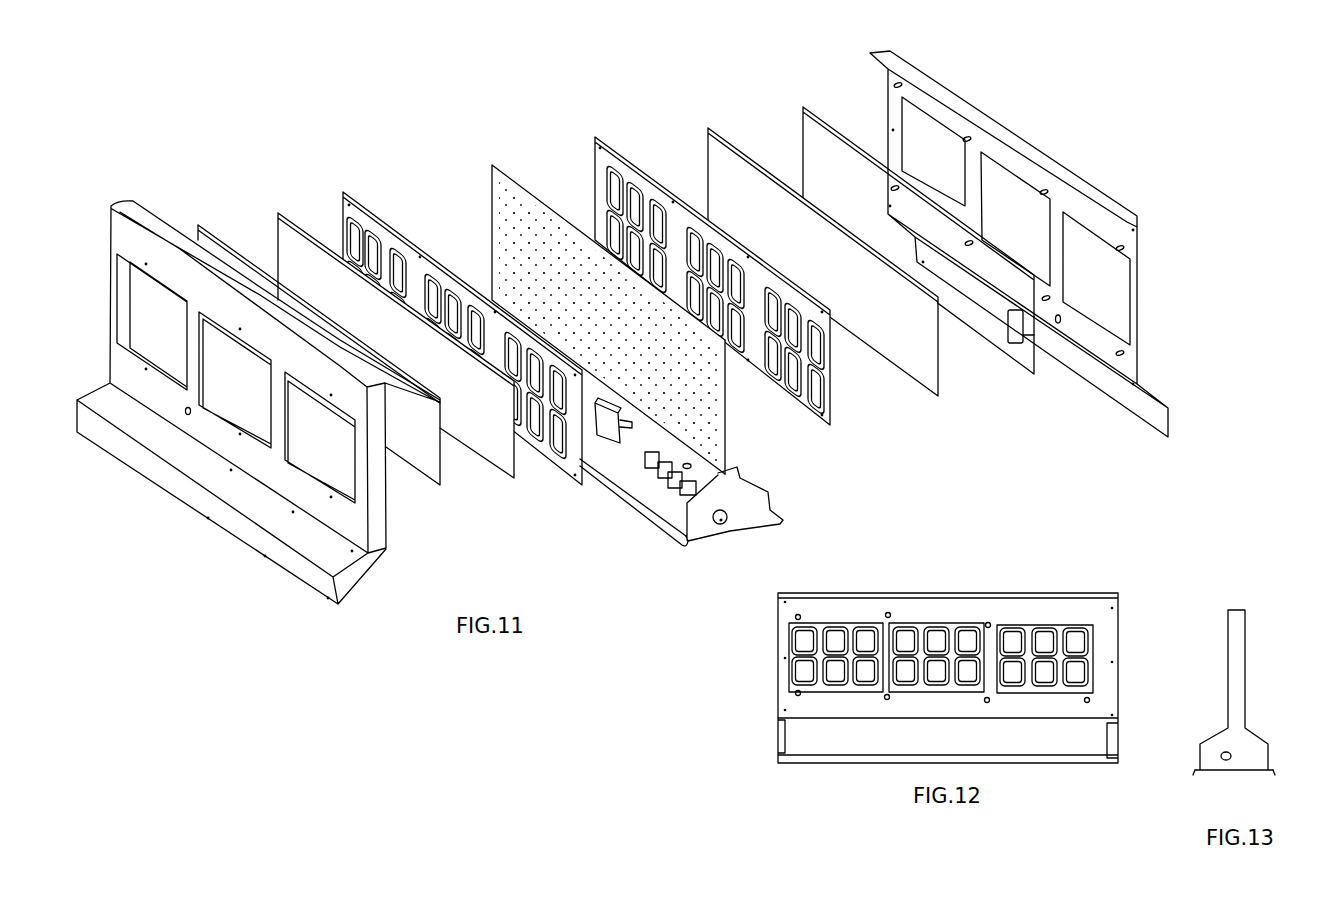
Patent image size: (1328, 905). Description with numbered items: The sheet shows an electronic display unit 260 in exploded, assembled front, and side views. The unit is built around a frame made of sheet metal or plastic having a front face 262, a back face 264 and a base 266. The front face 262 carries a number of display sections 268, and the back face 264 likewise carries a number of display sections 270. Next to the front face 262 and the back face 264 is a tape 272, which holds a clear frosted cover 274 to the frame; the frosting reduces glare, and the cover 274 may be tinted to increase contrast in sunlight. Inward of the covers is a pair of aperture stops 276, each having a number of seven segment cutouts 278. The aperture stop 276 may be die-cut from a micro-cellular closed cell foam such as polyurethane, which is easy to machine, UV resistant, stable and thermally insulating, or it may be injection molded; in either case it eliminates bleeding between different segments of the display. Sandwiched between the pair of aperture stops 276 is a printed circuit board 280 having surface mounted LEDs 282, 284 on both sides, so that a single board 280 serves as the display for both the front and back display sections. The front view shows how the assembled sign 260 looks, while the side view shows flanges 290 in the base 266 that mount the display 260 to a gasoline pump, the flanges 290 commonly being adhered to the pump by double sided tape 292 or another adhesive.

In FIG. 12, the electronic display unit 260 is at (995, 597).
In FIG. 11, the front face 262 is at (144, 214).
In FIG. 11, the back face 264 is at (891, 50).
In FIG. 11, the base 266 is at (743, 522).
In FIG. 11, the display sections 268 is at (165, 348).
In FIG. 11, the display sections 270 is at (915, 130).
In FIG. 11, the tape 272 is at (441, 492).
In FIG. 11, the clear frosted cover 274 is at (515, 481).
In FIG. 11, the aperture stops 276 is at (358, 200).
In FIG. 11, the seven segment cutouts 278 is at (428, 262).
In FIG. 11, the printed circuit board 280 is at (530, 190).
In FIG. 11, the surface mounted LEDs 282 is at (493, 186).
In FIG. 11, the surface mounted LEDs 284 is at (719, 368).
In FIG. 13, the flanges 290 is at (1196, 768).
In FIG. 13, the double sided tape 292 is at (1189, 779).